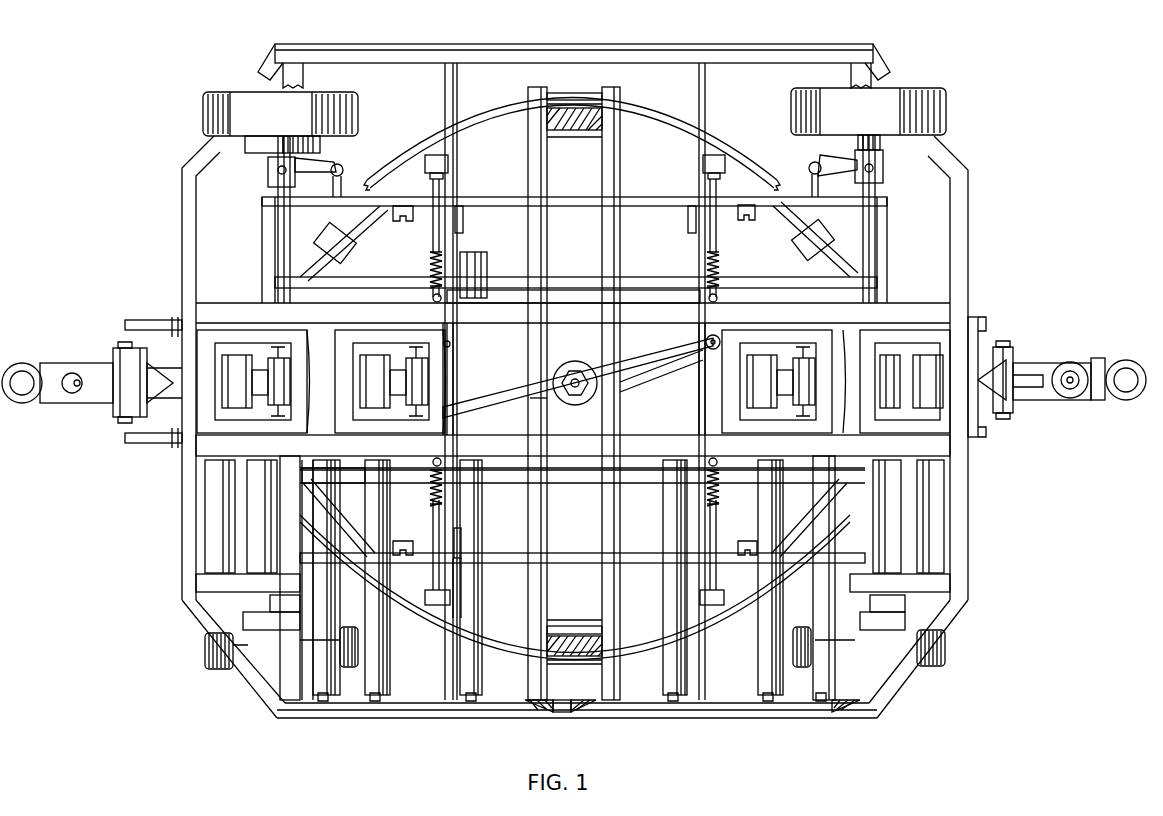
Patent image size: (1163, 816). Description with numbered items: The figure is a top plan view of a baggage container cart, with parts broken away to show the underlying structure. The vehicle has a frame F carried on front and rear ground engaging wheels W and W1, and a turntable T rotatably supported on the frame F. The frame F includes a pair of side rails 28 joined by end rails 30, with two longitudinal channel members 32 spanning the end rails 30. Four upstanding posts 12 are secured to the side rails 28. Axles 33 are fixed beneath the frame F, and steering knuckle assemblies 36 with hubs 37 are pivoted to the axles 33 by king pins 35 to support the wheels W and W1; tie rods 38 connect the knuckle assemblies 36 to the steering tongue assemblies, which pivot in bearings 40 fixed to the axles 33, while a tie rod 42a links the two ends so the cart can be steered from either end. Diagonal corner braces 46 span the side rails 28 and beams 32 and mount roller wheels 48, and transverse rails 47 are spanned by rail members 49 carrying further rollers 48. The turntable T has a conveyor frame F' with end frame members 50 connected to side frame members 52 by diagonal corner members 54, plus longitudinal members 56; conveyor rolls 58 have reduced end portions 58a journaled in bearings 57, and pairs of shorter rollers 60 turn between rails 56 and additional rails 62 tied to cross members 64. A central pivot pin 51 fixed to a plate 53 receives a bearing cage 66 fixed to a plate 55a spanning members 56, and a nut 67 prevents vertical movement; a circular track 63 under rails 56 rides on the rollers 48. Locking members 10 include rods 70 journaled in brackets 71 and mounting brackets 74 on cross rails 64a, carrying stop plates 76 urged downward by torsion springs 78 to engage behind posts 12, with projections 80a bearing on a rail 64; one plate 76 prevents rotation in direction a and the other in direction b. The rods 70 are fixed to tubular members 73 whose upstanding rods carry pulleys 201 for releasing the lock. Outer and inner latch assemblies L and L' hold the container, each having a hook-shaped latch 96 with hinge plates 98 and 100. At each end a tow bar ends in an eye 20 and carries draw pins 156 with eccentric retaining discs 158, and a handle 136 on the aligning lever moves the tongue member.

The locking member 10 is at (465, 155).
The upstanding post 12 is at (410, 226).
The eye 20 is at (1120, 366).
The side rail 28 is at (880, 200).
The end rail 30 is at (266, 270).
The channel member 32 is at (342, 280).
The axle 33 is at (270, 237).
The king pin 35 is at (280, 170).
The steering knuckle assembly 36 is at (274, 180).
The hub 37 is at (332, 156).
The tie rod 38 is at (812, 184).
The bearing 40 is at (1009, 314).
The tie rod 42a is at (664, 366).
The diagonal corner brace 46 is at (316, 258).
The transverse rail 47 is at (528, 152).
The roller wheel 48 is at (347, 240).
The rail member 49 is at (564, 96).
The end frame member 50 is at (968, 262).
The pivot pin 51 is at (578, 364).
The side frame member 52 is at (522, 44).
The plate 53 is at (563, 298).
The diagonal corner member 54 is at (258, 699).
The plate 55a is at (609, 410).
The longitudinal frame member 56 is at (476, 330).
The bearing 57 is at (570, 716).
The conveyor roll 58 is at (479, 268).
The reduced end portion 58a is at (535, 712).
The reduced length roller 60 is at (206, 545).
The rail 62 is at (202, 581).
The circular track 63 is at (662, 110).
The cross member 64 is at (463, 184).
The cross rail 64a is at (462, 618).
The bearing cage 66 is at (540, 404).
The nut 67 is at (576, 398).
The rod 70 is at (430, 254).
The bracket 71 is at (430, 304).
The tubular member 73 is at (434, 440).
The mounting bracket 74 is at (434, 130).
The stop plate 76 is at (413, 172).
The torsion spring 78 is at (722, 266).
The projection 80a is at (462, 224).
The hook-shaped latch 96 is at (878, 348).
The hinge plate 98 is at (906, 426).
The hinge plate 100 is at (928, 344).
The handle 136 is at (1046, 408).
The draw pin 156 is at (1086, 396).
The retaining disc 158 is at (1067, 362).
The pulley 201 is at (448, 344).
The front wheel W is at (918, 84).
The rear wheel W1 is at (310, 86).
The turntable T is at (699, 117).
The frame F is at (574, 216).
The conveyor frame F' is at (1012, 531).
The outer latch assembly L is at (532, 319).
The inner latch assembly L' is at (570, 319).
The arrow a is at (1005, 131).
The arrow b is at (141, 111).